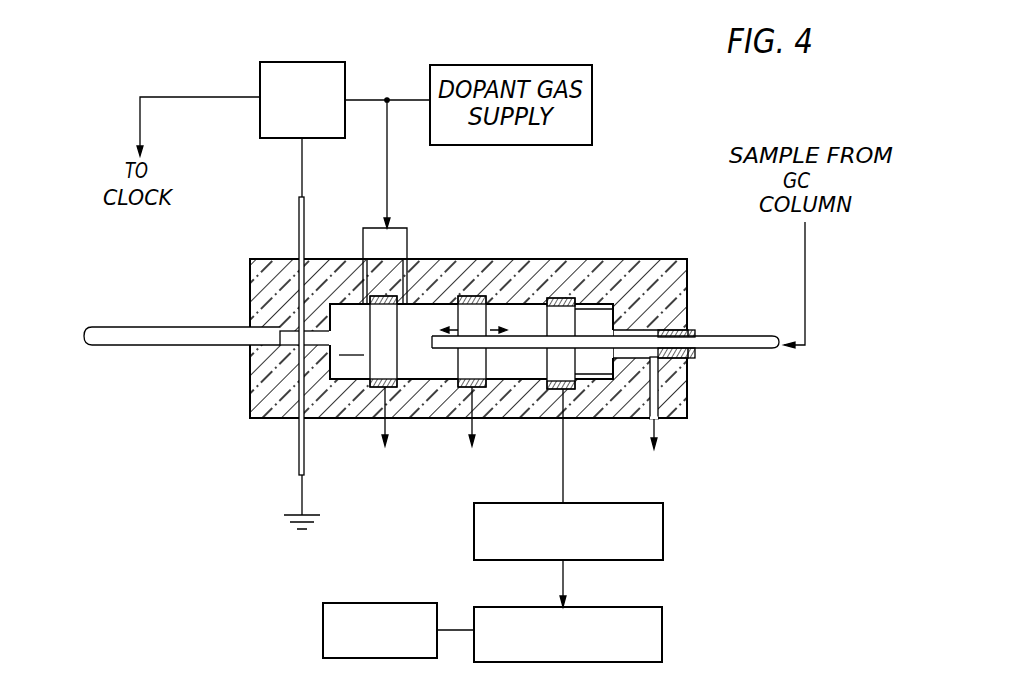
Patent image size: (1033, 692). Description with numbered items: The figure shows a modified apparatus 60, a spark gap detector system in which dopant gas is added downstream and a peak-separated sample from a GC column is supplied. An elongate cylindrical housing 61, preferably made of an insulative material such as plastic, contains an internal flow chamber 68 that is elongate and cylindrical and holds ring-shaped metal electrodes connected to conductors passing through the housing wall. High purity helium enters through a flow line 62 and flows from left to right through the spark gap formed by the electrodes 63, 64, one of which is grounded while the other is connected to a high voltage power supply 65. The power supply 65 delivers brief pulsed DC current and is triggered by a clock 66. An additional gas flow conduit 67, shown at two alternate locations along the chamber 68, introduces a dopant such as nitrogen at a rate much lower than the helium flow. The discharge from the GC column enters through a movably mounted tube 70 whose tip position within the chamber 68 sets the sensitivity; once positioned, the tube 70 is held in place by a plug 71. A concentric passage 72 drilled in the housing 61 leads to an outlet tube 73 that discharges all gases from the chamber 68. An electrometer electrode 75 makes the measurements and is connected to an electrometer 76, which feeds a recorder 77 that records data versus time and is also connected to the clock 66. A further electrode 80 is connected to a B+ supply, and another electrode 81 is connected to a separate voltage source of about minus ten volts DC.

The modified apparatus 60 is at (166, 449).
The housing 61 is at (250, 385).
The flow line 62 is at (181, 326).
The electrode 63 is at (297, 272).
The electrode 64 is at (285, 407).
The high voltage power supply 65 is at (302, 62).
The clock 66 is at (323, 635).
The gas flow conduit 67 is at (359, 272).
The chamber 68 is at (471, 341).
The tube 70 is at (538, 335).
The plug 71 is at (696, 333).
The passage 72 is at (649, 330).
The outlet tube 73 is at (659, 398).
The electrometer electrode 75 is at (557, 390).
The electrometer 76 is at (663, 537).
The recorder 77 is at (662, 638).
The electrode 80 is at (371, 388).
The electrode 81 is at (461, 388).